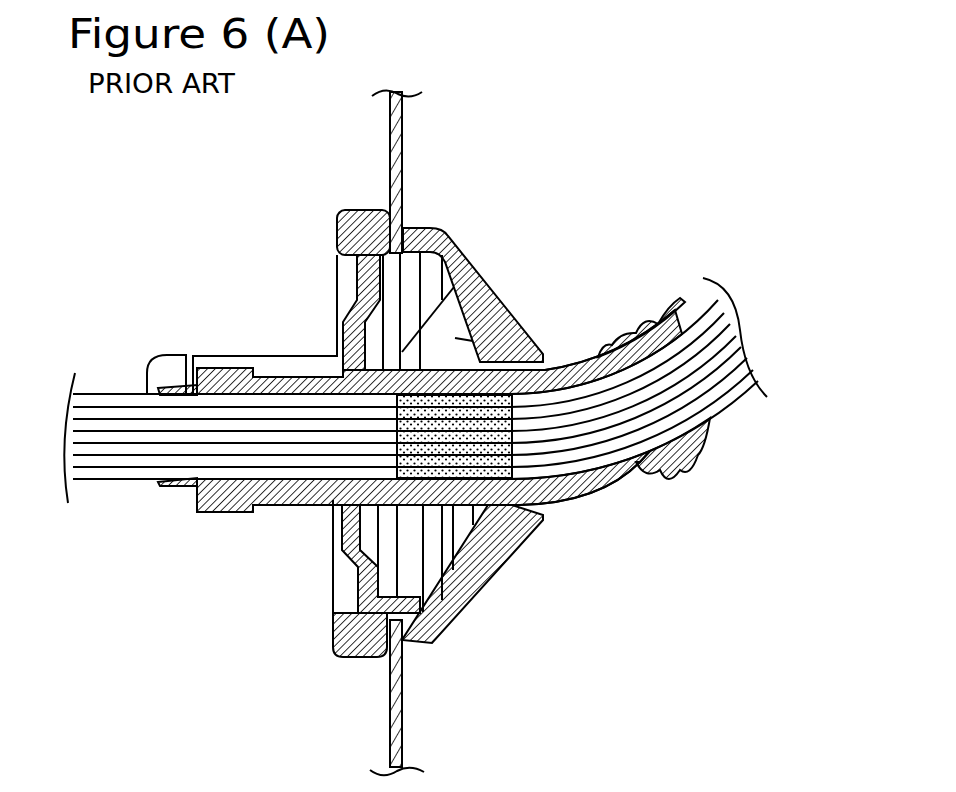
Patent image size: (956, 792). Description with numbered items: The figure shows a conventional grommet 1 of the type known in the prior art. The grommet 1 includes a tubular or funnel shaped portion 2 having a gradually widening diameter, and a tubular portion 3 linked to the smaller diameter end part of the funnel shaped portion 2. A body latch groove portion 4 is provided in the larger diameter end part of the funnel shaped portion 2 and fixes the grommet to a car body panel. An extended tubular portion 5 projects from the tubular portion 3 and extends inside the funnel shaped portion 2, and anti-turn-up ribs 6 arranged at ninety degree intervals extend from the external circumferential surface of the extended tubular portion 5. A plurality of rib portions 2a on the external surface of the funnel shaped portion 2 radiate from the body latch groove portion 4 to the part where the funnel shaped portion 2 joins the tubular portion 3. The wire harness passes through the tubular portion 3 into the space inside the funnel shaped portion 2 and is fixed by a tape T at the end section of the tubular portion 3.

The grommet 1 is at (257, 308).
The funnel shaped portion 2 is at (486, 290).
The rib portions 2a is at (532, 538).
The tubular portion 3 is at (588, 355).
The body latch groove portion 4 is at (390, 235).
The extended tubular portion 5 is at (470, 530).
The anti-turn-up ribs 6 is at (500, 302).
The tape T is at (677, 316).